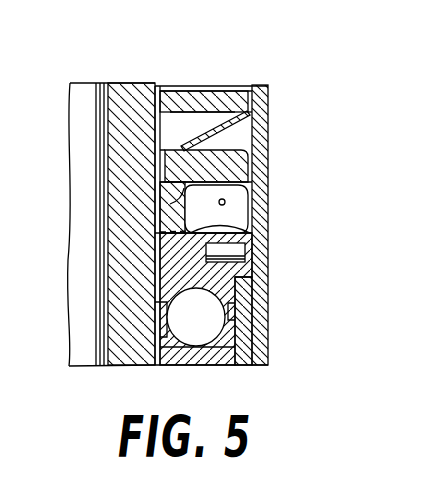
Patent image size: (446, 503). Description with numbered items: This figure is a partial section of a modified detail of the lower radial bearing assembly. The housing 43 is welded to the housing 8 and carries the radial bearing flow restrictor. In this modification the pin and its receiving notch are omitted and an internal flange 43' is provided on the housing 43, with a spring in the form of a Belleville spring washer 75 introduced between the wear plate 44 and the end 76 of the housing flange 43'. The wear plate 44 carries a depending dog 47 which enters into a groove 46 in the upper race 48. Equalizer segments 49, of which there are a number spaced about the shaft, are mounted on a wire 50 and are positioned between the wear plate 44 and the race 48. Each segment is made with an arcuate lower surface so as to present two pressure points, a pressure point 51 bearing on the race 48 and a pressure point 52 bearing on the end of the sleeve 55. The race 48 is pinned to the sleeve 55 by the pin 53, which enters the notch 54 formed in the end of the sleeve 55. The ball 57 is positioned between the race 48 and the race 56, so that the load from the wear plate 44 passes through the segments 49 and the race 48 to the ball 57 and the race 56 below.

The housing 8 is at (272, 232).
The housing 43 is at (244, 54).
The internal flange 43' is at (206, 71).
The wear plate 44 is at (232, 170).
The groove 46 is at (160, 232).
The depending dog 47 is at (170, 204).
The upper race 48 is at (218, 270).
The equalizer segment 49 is at (248, 218).
The wire 50 is at (225, 202).
The pressure point 51 is at (172, 250).
The pressure point 52 is at (246, 248).
The pin 53 is at (246, 257).
The notch 54 is at (244, 281).
The sleeve 55 is at (255, 263).
The race 56 is at (222, 352).
The ball 57 is at (212, 322).
The Belleville spring washer 75 is at (237, 121).
The end of the housing 76 is at (213, 93).